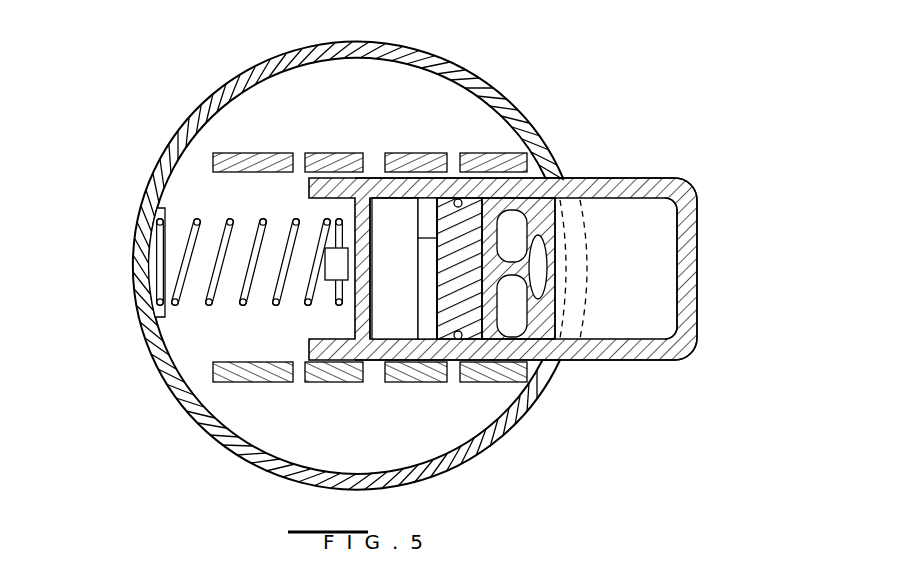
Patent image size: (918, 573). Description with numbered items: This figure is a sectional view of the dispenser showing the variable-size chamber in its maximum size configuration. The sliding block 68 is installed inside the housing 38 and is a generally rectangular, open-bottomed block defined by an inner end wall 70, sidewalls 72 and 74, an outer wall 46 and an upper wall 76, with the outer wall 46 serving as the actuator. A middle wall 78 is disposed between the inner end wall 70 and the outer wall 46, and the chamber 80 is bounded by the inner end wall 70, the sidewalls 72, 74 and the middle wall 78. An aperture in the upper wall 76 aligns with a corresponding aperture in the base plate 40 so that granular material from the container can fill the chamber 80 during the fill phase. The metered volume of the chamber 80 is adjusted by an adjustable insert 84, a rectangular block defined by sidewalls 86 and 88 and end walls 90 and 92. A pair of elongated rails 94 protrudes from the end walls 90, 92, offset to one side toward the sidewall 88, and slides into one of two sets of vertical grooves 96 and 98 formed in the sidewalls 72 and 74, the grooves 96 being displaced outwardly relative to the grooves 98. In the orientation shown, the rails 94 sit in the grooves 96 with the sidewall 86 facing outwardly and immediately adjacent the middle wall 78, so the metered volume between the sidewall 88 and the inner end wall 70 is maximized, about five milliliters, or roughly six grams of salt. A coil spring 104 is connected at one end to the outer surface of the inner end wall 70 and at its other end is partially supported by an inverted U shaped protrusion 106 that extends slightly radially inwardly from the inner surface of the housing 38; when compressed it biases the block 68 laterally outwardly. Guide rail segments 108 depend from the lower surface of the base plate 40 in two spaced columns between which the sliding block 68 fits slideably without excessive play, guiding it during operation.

The housing 38 is at (124, 279).
The base plate 40 is at (280, 92).
The outer wall 46 is at (697, 286).
The sliding block 68 is at (702, 220).
The inner end wall 70 is at (353, 212).
The sidewall 72 is at (537, 364).
The sidewall 74 is at (540, 176).
The upper wall 76 is at (540, 222).
The middle wall 78 is at (556, 204).
The chamber 80 is at (370, 305).
The adjustable insert 84 is at (428, 285).
The sidewall of insert 86 is at (550, 323).
The sidewall of insert 88 is at (367, 303).
The end wall of insert 90 is at (475, 342).
The end wall of insert 92 is at (434, 177).
The elongated rails 94 is at (458, 205).
The grooves 96 is at (468, 205).
The grooves 98 is at (416, 204).
The coil spring 104 is at (210, 305).
The inverted U shaped protrusion 106 is at (167, 233).
The guide rail segments 108 is at (259, 146).